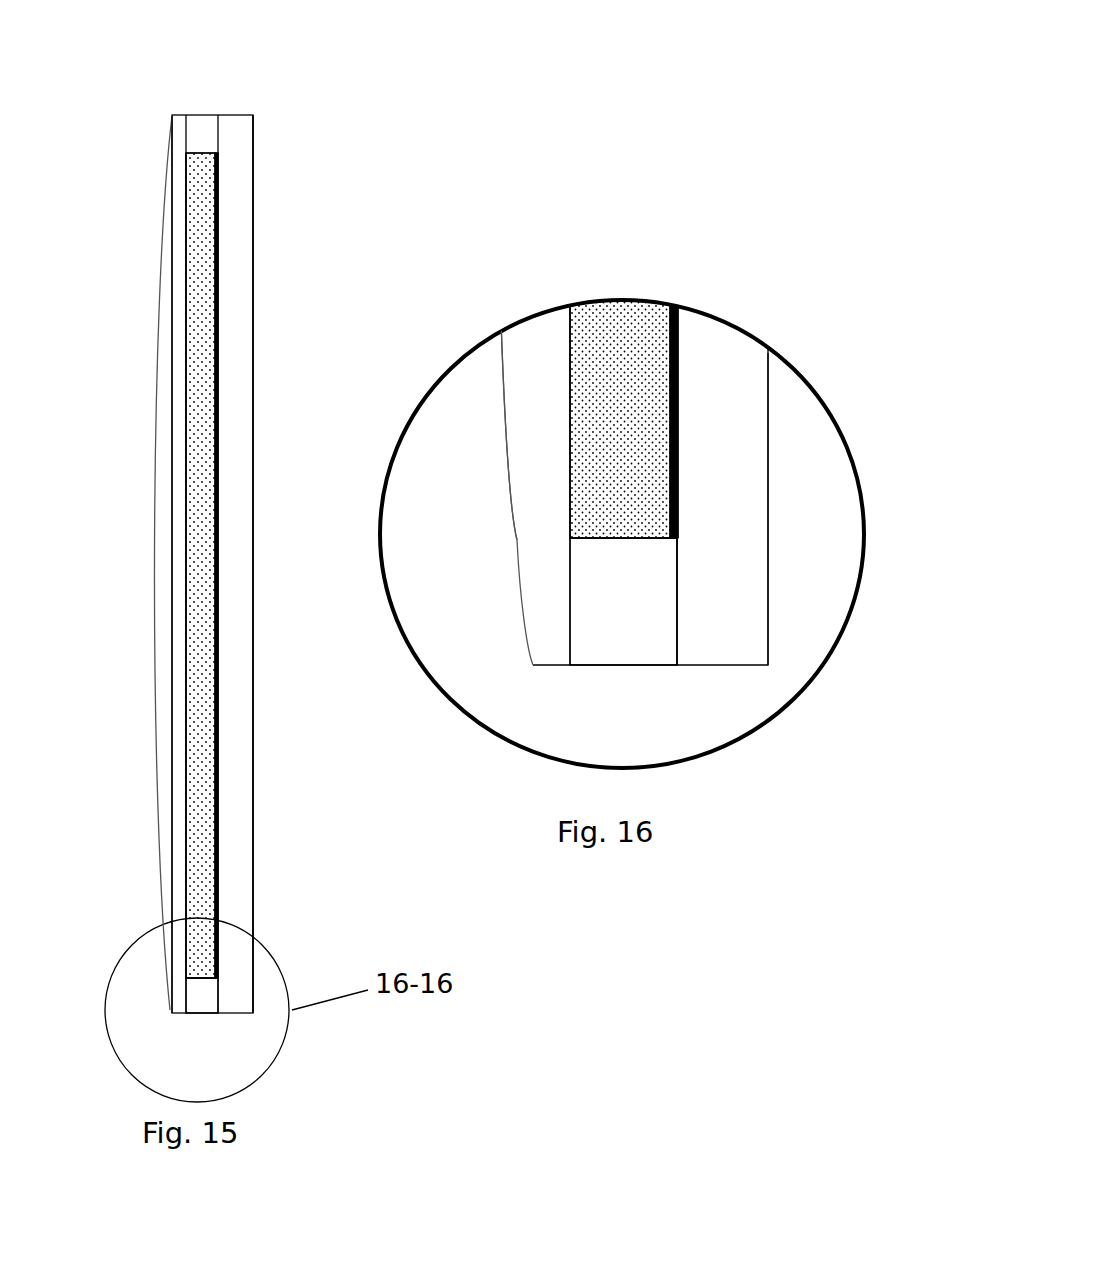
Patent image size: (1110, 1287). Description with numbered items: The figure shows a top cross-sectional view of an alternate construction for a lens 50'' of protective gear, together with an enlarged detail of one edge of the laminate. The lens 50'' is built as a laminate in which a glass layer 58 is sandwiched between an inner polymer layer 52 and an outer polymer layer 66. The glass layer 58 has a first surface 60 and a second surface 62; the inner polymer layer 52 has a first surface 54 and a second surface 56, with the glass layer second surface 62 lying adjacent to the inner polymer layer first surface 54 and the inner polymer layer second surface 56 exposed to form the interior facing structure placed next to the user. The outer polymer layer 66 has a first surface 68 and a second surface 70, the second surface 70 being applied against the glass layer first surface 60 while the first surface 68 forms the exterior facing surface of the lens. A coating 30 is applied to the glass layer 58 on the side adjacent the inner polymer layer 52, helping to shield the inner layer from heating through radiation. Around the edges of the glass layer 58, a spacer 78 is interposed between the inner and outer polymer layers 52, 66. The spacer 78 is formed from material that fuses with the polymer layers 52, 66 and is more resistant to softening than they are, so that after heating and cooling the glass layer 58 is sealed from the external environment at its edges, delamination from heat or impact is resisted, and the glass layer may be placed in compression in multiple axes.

In FIG. 15, the coating 30 is at (215, 153).
In FIG. 16, the coating 30 is at (673, 305).
In FIG. 15, the lens 50'' is at (254, 560).
In FIG. 15, the inner polymer layer 52 is at (252, 133).
In FIG. 16, the inner polymer layer 52 is at (750, 333).
In FIG. 15, the first surface of inner polymer layer 54 is at (215, 748).
In FIG. 16, the first surface of inner polymer layer 54 is at (682, 626).
In FIG. 15, the second surface of inner polymer layer 56 is at (253, 758).
In FIG. 16, the second surface of inner polymer layer 56 is at (770, 625).
In FIG. 15, the glass layer 58 is at (195, 183).
In FIG. 16, the glass layer 58 is at (617, 300).
In FIG. 15, the first surface of glass layer 60 is at (190, 620).
In FIG. 16, the first surface of glass layer 60 is at (568, 530).
In FIG. 15, the second surface of glass layer 62 is at (218, 620).
In FIG. 16, the second surface of glass layer 62 is at (672, 531).
In FIG. 15, the outer polymer layer 66 is at (162, 228).
In FIG. 16, the outer polymer layer 66 is at (523, 328).
In FIG. 15, the first surface of outer polymer layer 68 is at (152, 358).
In FIG. 16, the first surface of outer polymer layer 68 is at (510, 427).
In FIG. 15, the second surface of outer polymer layer 70 is at (190, 357).
In FIG. 16, the second surface of outer polymer layer 70 is at (575, 432).
In FIG. 15, the spacer 78 is at (205, 998).
In FIG. 16, the spacer 78 is at (618, 622).